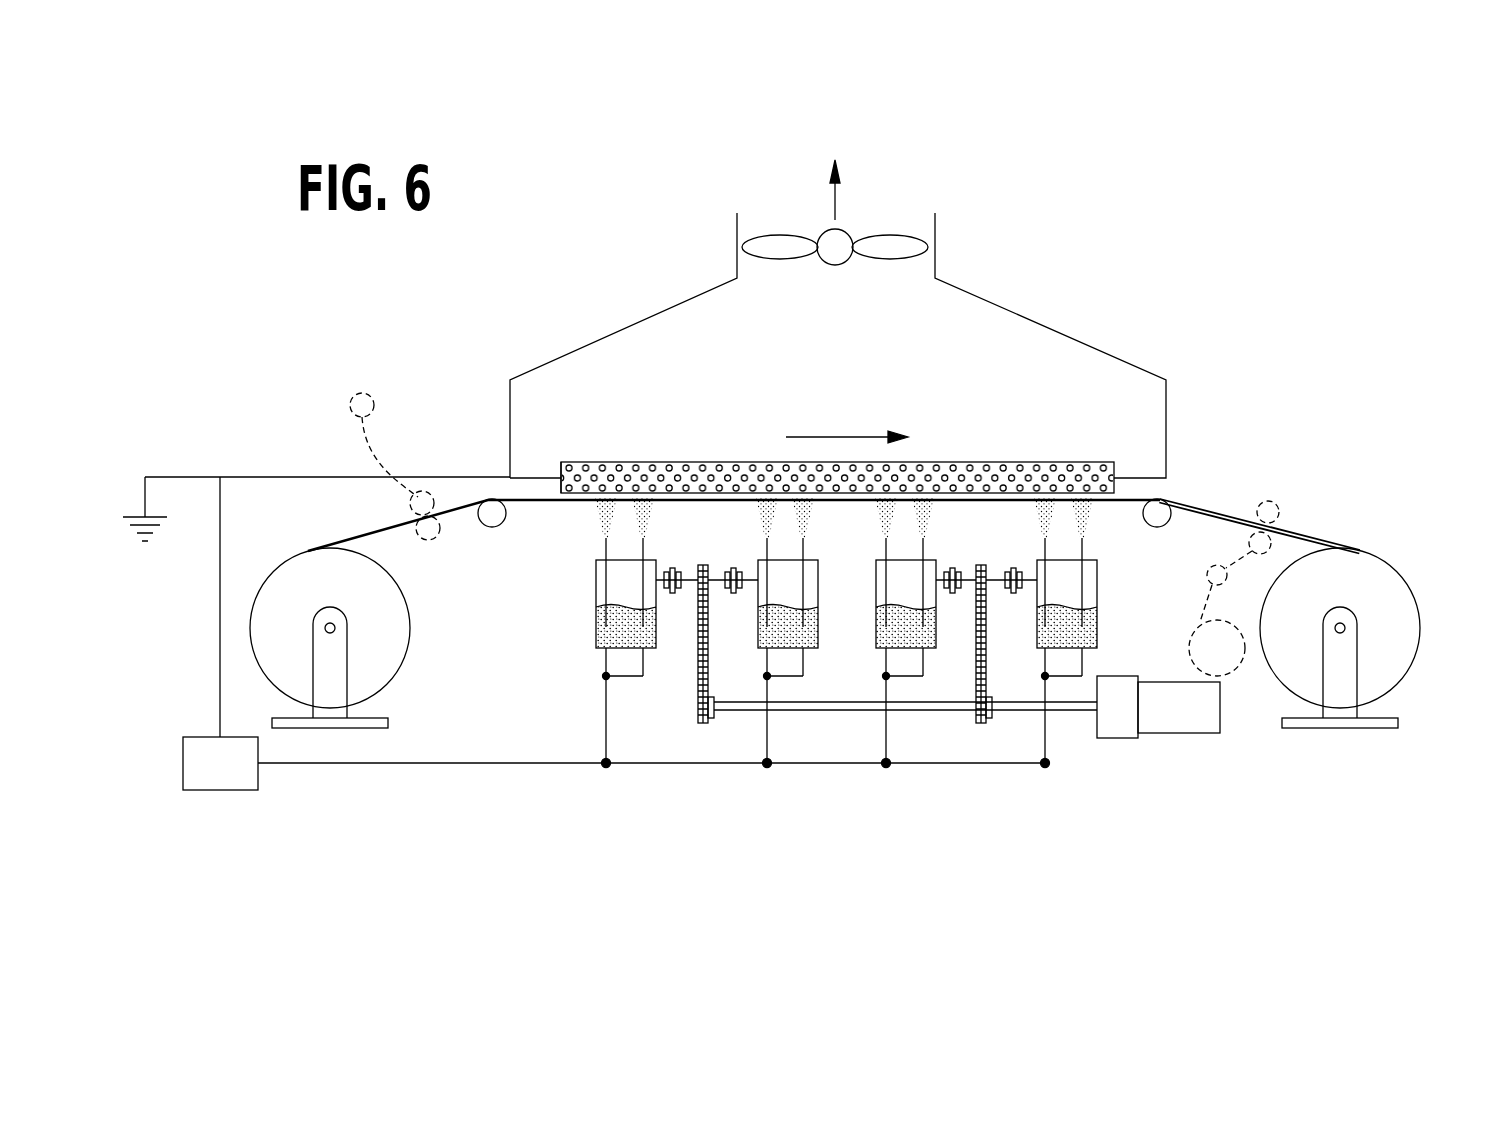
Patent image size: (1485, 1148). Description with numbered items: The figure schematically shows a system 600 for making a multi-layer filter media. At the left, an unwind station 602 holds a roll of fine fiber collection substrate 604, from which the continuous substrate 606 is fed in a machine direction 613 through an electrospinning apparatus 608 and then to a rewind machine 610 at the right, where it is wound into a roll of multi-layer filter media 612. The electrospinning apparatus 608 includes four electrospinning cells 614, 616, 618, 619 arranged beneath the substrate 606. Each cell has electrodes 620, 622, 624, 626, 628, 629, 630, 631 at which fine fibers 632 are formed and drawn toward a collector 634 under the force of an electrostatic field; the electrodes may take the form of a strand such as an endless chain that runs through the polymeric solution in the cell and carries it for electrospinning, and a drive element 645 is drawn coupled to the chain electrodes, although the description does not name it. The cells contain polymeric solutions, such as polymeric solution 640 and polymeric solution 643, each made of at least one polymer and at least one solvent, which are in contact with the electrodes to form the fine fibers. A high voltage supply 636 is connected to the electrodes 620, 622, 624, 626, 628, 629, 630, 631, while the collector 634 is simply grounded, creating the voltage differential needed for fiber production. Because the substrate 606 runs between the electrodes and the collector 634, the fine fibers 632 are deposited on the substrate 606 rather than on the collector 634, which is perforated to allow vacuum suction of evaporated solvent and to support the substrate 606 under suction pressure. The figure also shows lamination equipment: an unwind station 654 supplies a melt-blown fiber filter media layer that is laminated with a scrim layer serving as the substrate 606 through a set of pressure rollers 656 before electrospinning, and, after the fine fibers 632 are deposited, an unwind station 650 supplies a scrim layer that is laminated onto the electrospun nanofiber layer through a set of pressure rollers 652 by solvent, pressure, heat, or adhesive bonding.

The system 600 is at (1146, 232).
The unwind station 602 is at (360, 727).
The roll of fine fiber collection substrate 604 is at (292, 602).
The continuous substrate 606 is at (453, 512).
The electrospinning apparatus 608 is at (712, 465).
The rewind machine 610 is at (1372, 728).
The roll of multi-layer filter media 612 is at (1407, 620).
The machine direction 613 is at (838, 437).
The electrospinning cell 614 is at (840, 633).
The electrospinning cell 616 is at (787, 633).
The electrospinning cell 618 is at (918, 633).
The electrospinning cell 619 is at (1080, 633).
The electrode 620 is at (596, 562).
The electrode 622 is at (643, 550).
The electrode 624 is at (762, 548).
The electrode 626 is at (805, 550).
The electrode 628 is at (818, 567).
The electrode 629 is at (923, 548).
The electrode 630 is at (1042, 548).
The electrode 631 is at (1085, 547).
The fine fibers 632 is at (598, 512).
The collector 634 is at (597, 465).
The high voltage supply 636 is at (220, 792).
The polymeric solution 640 is at (698, 628).
The polymeric solution 643 is at (1096, 630).
The motor shaft 645 is at (937, 627).
The unwind station 650 is at (1233, 667).
The pressure rollers 652 is at (1282, 514).
The unwind station 654 is at (363, 397).
The pressure rollers 656 is at (423, 493).